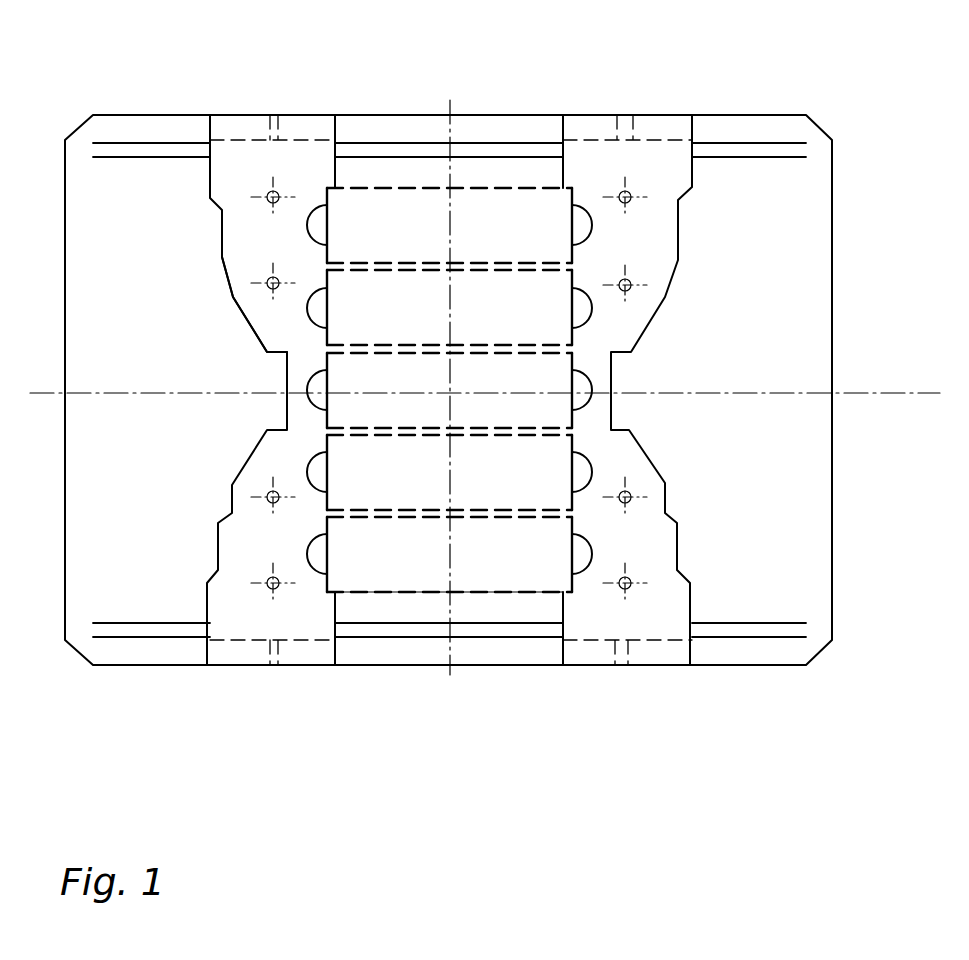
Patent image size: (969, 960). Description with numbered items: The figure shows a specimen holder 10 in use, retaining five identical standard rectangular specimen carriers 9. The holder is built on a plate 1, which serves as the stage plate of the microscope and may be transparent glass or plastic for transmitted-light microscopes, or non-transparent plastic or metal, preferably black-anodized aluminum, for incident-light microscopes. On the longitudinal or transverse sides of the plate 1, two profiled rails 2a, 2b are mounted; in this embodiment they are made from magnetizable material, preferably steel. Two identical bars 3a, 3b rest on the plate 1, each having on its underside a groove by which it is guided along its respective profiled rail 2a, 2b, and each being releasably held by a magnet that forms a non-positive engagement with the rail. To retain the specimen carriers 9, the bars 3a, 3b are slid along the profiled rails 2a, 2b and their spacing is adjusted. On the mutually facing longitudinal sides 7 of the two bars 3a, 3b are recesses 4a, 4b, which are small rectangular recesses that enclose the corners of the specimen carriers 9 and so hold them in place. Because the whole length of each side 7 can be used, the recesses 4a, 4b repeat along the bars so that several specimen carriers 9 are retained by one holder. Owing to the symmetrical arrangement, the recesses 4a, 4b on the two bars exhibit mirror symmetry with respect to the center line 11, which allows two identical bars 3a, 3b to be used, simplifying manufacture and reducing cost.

The plate 1 is at (797, 338).
The profiled rail 2a is at (735, 137).
The profiled rail 2b is at (753, 650).
The bar 3a is at (653, 598).
The bar 3b is at (290, 618).
The recesses 4a is at (328, 422).
The recesses 4b is at (278, 390).
The mutually facing sides 7 is at (563, 173).
The specimen carriers 9 is at (503, 222).
The specimen holder 10 is at (357, 62).
The center line 11 is at (447, 647).